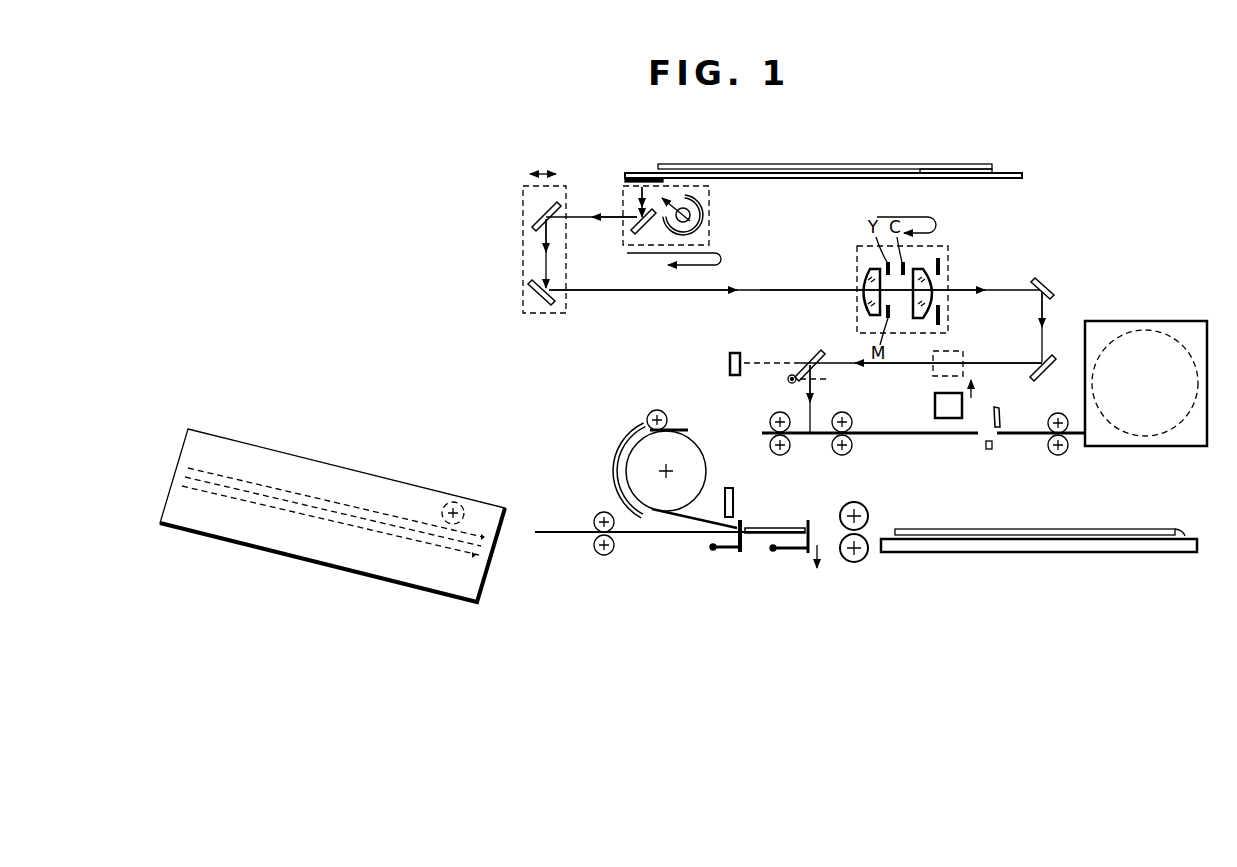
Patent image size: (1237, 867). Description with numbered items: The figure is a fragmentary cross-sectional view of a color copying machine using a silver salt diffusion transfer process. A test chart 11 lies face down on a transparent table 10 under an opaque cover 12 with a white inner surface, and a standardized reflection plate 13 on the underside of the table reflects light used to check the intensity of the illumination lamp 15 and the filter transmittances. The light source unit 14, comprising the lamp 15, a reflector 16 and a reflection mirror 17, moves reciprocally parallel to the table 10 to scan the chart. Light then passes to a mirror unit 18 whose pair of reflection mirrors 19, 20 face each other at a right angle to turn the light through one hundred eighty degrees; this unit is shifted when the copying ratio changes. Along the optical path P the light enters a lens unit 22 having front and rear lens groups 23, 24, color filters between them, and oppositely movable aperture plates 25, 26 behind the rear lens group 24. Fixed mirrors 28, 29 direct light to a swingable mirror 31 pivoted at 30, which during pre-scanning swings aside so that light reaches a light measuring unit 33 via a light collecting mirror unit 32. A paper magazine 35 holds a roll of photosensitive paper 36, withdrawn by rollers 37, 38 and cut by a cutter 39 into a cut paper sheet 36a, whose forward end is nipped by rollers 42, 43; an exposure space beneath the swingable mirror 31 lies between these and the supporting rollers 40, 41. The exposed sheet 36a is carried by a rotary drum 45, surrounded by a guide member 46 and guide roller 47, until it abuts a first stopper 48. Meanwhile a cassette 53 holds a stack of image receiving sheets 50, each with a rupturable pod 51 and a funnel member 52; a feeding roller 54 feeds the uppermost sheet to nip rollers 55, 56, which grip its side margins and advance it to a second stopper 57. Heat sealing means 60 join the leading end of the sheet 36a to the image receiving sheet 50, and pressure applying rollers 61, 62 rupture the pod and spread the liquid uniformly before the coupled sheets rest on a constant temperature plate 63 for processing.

The transparent table 10 is at (1000, 172).
The test chart 11 is at (783, 164).
The opaque cover 12 is at (943, 169).
The standardized reflection plate 13 is at (625, 178).
The light source unit 14 is at (659, 223).
The illumination lamp 15 is at (690, 217).
The reflector 16 is at (700, 207).
The reflection mirror 17 is at (633, 232).
The mirror unit 18 is at (512, 270).
The reflection mirror 19 is at (537, 216).
The reflection mirror 20 is at (545, 305).
The optical path P is at (767, 290).
The lens unit 22 is at (898, 277).
The front lens group 23 is at (865, 283).
The rear lens group 24 is at (920, 272).
The aperture plate 25 is at (942, 268).
The aperture plate 26 is at (942, 315).
The fixed mirror 28 is at (1050, 281).
The fixed mirror 29 is at (1040, 378).
The pivot 30 is at (788, 380).
The swingable mirror 31 is at (805, 355).
The light collecting mirror unit 32 is at (963, 352).
The light measuring unit 33 is at (730, 362).
The paper magazine 35 is at (1143, 320).
The photosensitive paper 36 is at (1030, 434).
The cut paper sheet 36a is at (950, 434).
The roller 37 is at (1060, 413).
The roller 38 is at (1066, 452).
The cutter 39 is at (998, 407).
The supporting roller 40 is at (770, 418).
The supporting roller 41 is at (789, 452).
The roller 42 is at (847, 412).
The roller 43 is at (852, 452).
The rotary drum 45 is at (636, 465).
The guide member 46 is at (628, 435).
The guide roller 47 is at (657, 410).
The first stopper 48 is at (741, 520).
The image receiving sheet 50 is at (636, 534).
The pod 51 is at (790, 528).
The funnel member 52 is at (714, 549).
The image receiving sheet holding cassette 53 is at (373, 470).
The feeding roller 54 is at (453, 502).
The nip roller 55 is at (602, 512).
The nip roller 56 is at (602, 555).
The second stopper 57 is at (790, 560).
The heat sealing means 60 is at (730, 488).
The pressure applying roller 61 is at (866, 508).
The pressure applying roller 62 is at (855, 562).
The constant temperature plate 63 is at (1030, 552).